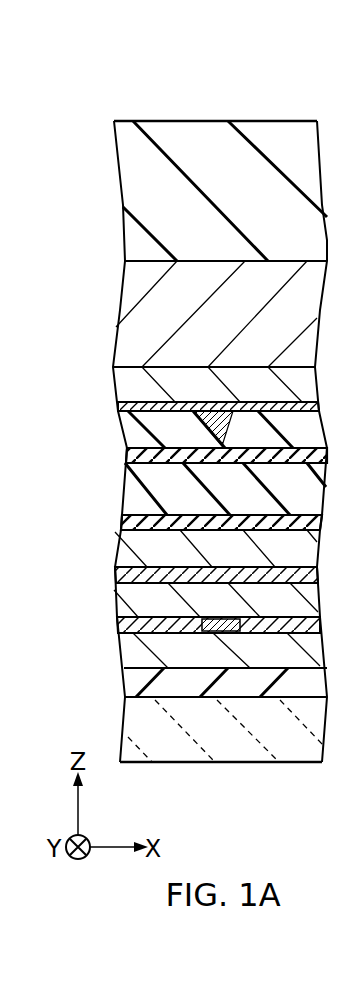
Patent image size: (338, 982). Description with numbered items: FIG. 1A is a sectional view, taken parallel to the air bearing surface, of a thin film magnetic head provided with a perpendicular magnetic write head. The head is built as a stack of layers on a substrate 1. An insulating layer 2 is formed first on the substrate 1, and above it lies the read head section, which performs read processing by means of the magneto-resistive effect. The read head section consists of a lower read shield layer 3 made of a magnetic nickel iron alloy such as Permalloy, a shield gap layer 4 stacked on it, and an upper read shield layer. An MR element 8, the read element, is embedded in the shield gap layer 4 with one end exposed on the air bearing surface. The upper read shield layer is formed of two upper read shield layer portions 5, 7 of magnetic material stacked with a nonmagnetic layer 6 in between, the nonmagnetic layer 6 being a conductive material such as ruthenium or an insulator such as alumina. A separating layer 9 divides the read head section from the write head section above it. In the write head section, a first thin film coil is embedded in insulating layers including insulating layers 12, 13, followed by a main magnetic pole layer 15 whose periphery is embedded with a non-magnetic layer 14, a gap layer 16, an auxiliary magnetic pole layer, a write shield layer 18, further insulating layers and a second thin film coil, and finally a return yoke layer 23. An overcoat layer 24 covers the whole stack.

The substrate 1 is at (308, 750).
The insulating layer 2 is at (282, 690).
The lower read shield layer 3 is at (257, 657).
The shield gap layer 4 is at (192, 627).
The upper read shield layer portion 5 is at (173, 603).
The nonmagnetic layer 6 is at (150, 575).
The upper read shield layer portion 7 is at (130, 557).
The MR element 8 is at (220, 633).
The separating layer 9 is at (132, 518).
The insulating layer 12 is at (131, 492).
The insulating layer 13 is at (131, 455).
The non-magnetic layer 14 is at (268, 405).
The main magnetic pole layer 15 is at (218, 428).
The gap layer 16 is at (142, 400).
The write shield layer 18 is at (178, 380).
The return yoke layer 23 is at (207, 282).
The overcoat layer 24 is at (218, 135).